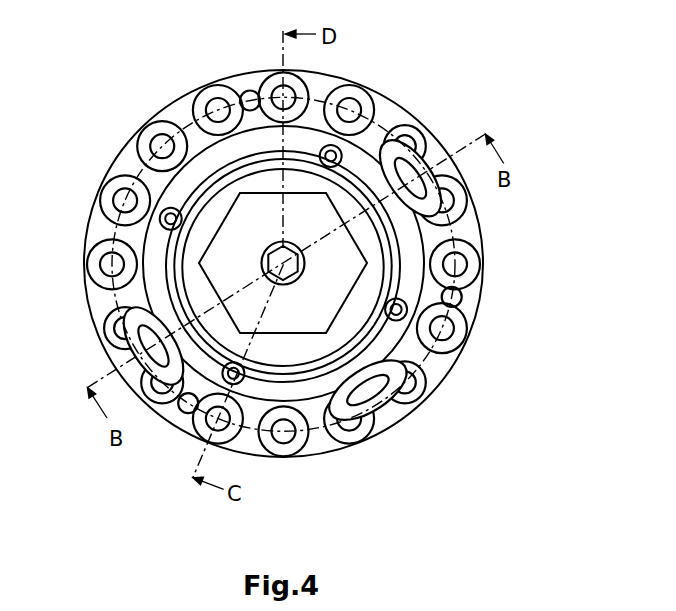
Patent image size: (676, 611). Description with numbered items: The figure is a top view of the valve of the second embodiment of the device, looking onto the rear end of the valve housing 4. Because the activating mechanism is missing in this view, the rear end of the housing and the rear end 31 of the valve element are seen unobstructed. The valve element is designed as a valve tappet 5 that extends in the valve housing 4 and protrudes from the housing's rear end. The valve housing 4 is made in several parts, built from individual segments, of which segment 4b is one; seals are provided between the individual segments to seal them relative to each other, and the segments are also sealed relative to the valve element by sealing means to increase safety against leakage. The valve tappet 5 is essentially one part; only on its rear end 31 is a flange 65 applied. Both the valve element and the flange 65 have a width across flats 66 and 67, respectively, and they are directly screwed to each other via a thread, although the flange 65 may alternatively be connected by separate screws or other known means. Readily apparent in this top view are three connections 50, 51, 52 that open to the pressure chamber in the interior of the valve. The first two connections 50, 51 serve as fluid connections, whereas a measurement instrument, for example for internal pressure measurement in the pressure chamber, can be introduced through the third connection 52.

The valve housing 4 is at (314, 259).
The individual segment 4b is at (408, 242).
The valve tappet 5 is at (314, 378).
The rear end 31 is at (314, 378).
The width across flats 66 is at (283, 266).
The flange 65 is at (293, 215).
The width across flats 67 is at (314, 212).
The connection 50 is at (134, 321).
The connection 51 is at (398, 360).
The connection 52 is at (390, 153).